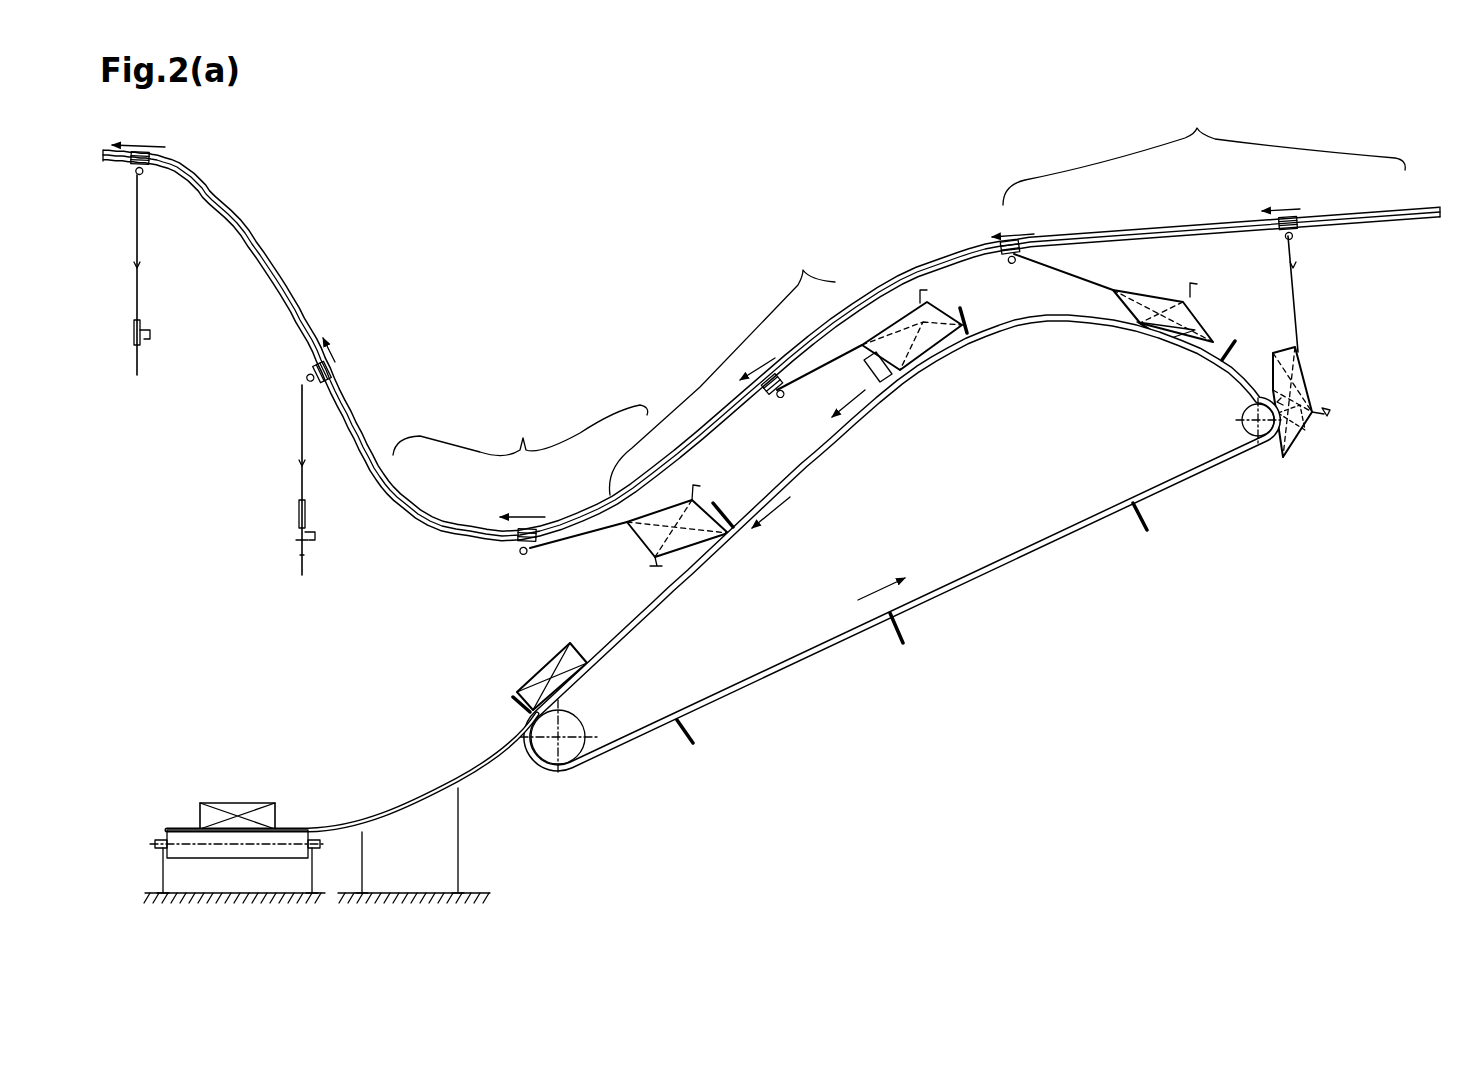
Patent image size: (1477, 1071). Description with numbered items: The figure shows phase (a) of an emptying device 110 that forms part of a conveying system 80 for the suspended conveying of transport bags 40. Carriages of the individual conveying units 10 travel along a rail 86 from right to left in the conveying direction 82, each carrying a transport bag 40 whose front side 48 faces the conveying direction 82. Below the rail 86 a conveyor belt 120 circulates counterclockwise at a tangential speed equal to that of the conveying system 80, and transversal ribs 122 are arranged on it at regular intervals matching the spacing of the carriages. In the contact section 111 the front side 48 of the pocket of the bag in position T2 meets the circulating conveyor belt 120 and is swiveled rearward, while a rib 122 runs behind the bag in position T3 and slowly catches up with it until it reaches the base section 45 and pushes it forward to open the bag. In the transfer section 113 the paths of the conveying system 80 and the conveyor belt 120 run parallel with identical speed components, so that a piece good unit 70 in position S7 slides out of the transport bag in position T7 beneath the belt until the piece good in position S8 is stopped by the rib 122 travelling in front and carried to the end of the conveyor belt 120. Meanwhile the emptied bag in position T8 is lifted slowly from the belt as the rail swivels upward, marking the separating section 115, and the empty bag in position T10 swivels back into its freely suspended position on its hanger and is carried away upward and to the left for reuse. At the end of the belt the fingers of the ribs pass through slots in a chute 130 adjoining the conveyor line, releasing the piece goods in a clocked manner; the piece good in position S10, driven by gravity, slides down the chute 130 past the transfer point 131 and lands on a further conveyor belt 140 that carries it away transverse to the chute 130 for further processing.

The conveying system 80 is at (1393, 130).
The rail 86 is at (243, 218).
The conveying direction 82 is at (331, 372).
The conveying unit 10 is at (302, 430).
The transport bag 40 is at (1293, 294).
The emptying device 110 is at (487, 222).
The contact section 111 is at (1204, 155).
The transfer section 113 is at (722, 370).
The separating section 115 is at (520, 430).
The piece good unit 70 is at (885, 375).
The front side 48 is at (960, 335).
The base section 45 is at (1302, 432).
The empty transport bag position T10 is at (302, 470).
The emptied transport bag position T8 is at (655, 533).
The piece good position S7 is at (880, 400).
The transport bag position T7 is at (978, 355).
The transport bag position T3 is at (1168, 345).
The transport bag position T2 is at (1295, 450).
The piece good position S8 is at (563, 660).
The piece good position S10 is at (265, 810).
The conveyor belt 120 is at (1017, 553).
The transversal rib 122 is at (722, 520).
The chute 130 is at (415, 797).
The transfer point 131 is at (510, 765).
The conveyor belt 140 is at (183, 830).